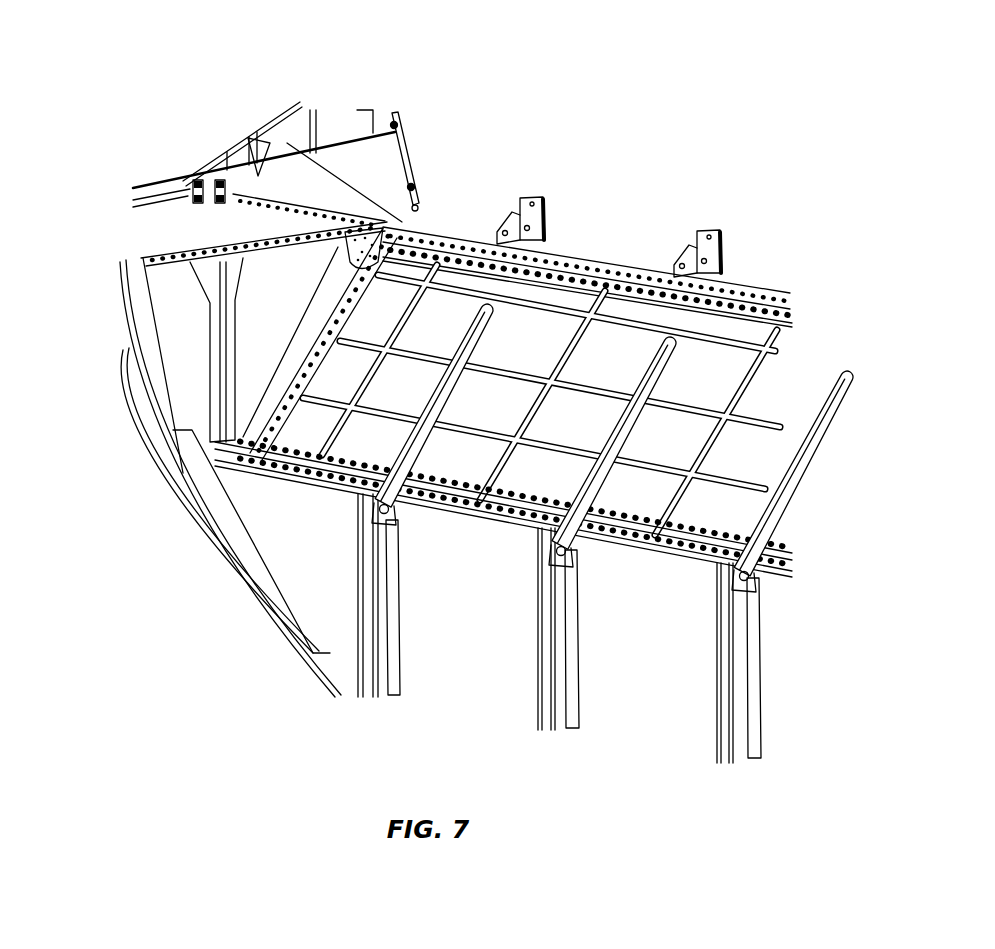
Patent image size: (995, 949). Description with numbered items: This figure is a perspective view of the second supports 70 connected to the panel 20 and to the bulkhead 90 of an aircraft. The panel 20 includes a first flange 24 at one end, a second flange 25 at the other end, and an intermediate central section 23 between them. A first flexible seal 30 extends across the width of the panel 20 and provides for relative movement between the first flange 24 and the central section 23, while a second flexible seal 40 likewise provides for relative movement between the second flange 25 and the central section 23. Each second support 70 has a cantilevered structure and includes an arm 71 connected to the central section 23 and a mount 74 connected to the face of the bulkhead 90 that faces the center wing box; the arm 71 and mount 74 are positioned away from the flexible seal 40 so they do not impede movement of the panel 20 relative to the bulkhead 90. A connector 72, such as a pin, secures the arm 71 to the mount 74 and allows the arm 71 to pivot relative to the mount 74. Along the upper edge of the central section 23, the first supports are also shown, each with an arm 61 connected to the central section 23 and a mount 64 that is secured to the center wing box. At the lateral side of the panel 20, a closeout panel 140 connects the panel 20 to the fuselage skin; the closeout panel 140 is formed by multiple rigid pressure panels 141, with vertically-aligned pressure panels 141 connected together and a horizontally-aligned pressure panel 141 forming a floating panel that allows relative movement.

The panel 20 is at (476, 174).
The central section 23 is at (770, 395).
The first flange 24 is at (386, 218).
The second flange 25 is at (293, 477).
The first flexible seal 30 is at (298, 158).
The second flexible seal 40 is at (462, 515).
The arm 61 is at (505, 233).
The mount 64 is at (537, 197).
The second support 70 is at (488, 537).
The arm 71 is at (400, 447).
The connector 72 is at (390, 500).
The mount 74 is at (377, 607).
The bulkhead 90 is at (773, 622).
The closeout panel 140 is at (133, 302).
The pressure panel 141 is at (236, 229).